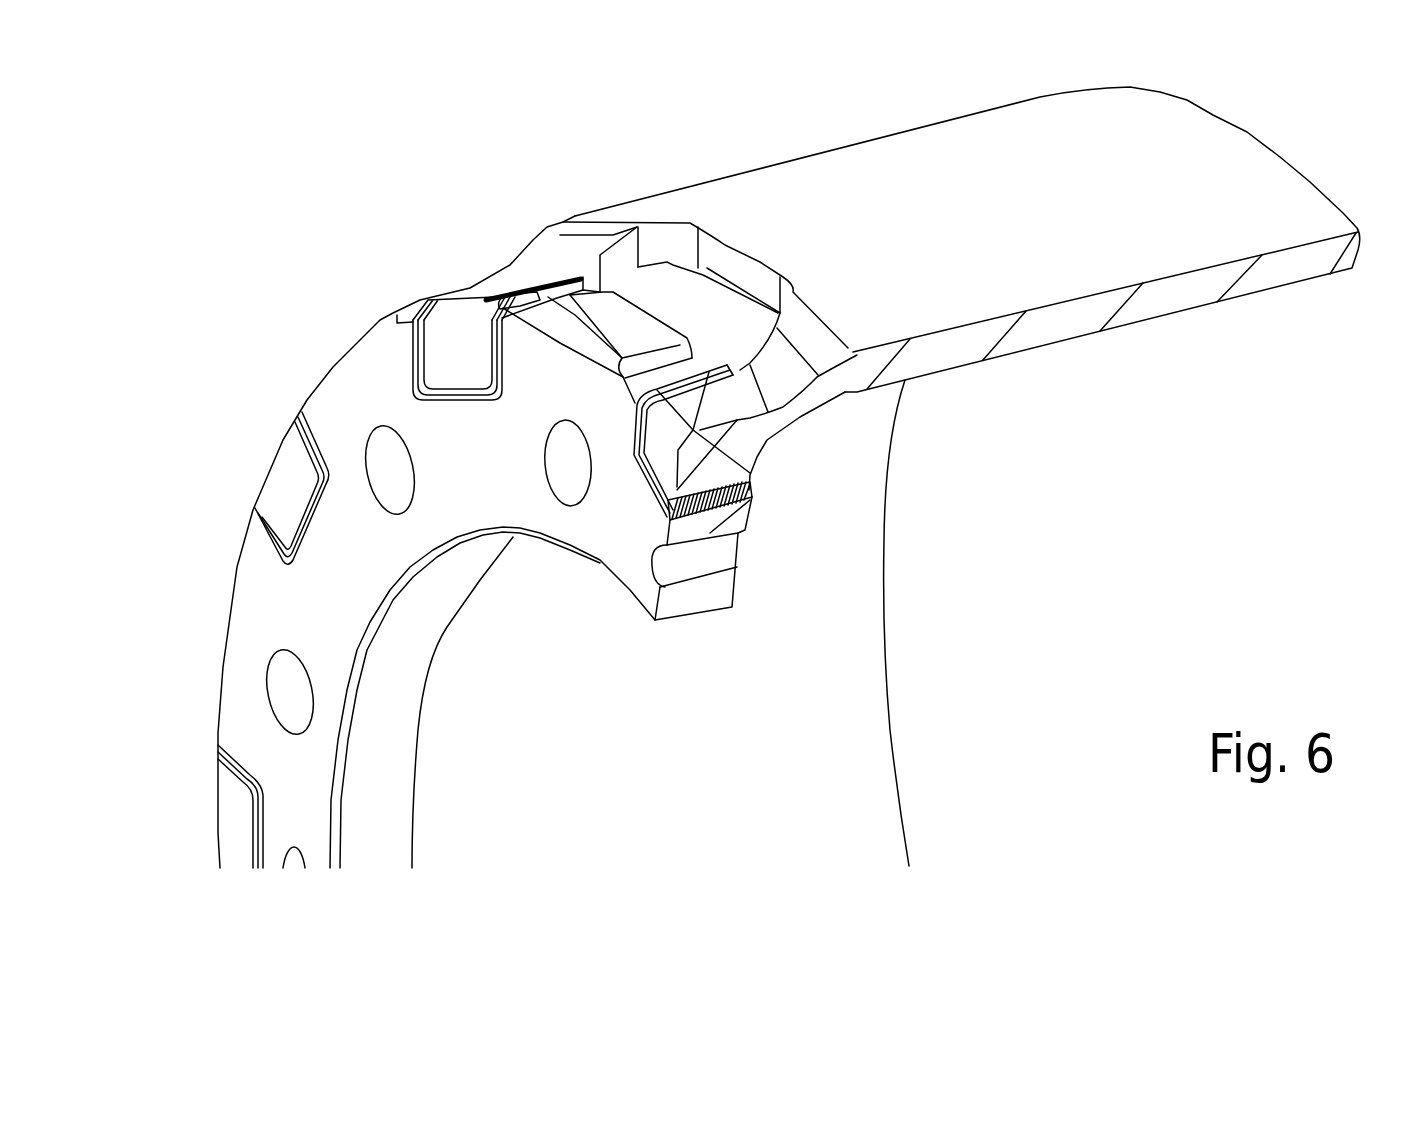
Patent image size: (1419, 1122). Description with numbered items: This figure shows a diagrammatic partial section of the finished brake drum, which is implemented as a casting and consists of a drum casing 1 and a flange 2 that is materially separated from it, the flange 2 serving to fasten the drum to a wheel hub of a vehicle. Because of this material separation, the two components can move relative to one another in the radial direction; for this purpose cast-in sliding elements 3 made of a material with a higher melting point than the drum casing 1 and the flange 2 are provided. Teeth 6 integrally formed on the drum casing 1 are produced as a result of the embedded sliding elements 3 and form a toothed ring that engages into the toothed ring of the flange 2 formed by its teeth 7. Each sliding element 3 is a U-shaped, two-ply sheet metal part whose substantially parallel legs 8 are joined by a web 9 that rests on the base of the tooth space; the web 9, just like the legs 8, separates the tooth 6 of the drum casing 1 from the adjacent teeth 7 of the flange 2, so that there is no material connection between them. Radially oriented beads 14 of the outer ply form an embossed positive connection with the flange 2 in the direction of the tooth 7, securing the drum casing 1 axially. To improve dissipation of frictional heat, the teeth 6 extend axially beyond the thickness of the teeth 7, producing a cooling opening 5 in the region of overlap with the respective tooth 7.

The drum casing 1 is at (1050, 222).
The flange 2 is at (350, 610).
The sliding element 3 is at (627, 425).
The cooling opening 5 is at (728, 323).
The tooth 6 is at (712, 405).
The tooth 7 is at (372, 372).
The leg 8 is at (634, 472).
The web 9 is at (655, 495).
The bead 14 is at (500, 295).